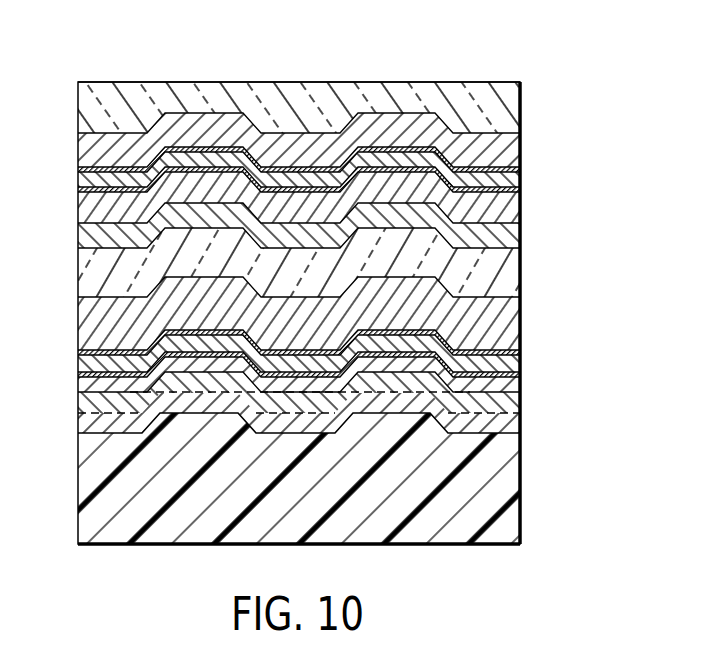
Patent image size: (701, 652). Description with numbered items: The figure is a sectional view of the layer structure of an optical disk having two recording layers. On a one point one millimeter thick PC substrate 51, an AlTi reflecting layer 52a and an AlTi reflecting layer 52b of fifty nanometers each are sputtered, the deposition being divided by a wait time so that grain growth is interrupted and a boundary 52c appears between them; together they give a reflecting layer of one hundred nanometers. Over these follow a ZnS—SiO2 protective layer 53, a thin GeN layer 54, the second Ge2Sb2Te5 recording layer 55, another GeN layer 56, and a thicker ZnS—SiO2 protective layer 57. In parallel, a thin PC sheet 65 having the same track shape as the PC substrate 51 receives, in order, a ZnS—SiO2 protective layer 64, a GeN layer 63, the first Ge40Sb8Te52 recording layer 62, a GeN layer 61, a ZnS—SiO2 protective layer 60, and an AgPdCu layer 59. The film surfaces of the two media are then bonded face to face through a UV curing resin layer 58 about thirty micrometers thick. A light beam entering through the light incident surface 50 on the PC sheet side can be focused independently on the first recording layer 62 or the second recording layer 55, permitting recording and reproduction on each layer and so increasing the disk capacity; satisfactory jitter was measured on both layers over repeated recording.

The light incident surface 50 is at (340, 74).
The PC substrate 51 is at (520, 482).
The AlTi reflecting layer 52a is at (520, 422).
The AlTi reflecting layer 52b is at (520, 401).
The boundary 52c is at (78, 417).
The ZnS—SiO2 protective layer 53 is at (520, 381).
The GeN layer 54 is at (78, 375).
The second recording layer 55 is at (520, 360).
The GeN layer 56 is at (78, 353).
The ZnS—SiO2 protective layer 57 is at (520, 322).
The UV curing resin layer 58 is at (520, 267).
The AgPdCu layer 59 is at (520, 235).
The ZnS—SiO2 protective layer 60 is at (520, 207).
The GeN layer 61 is at (78, 190).
The first recording layer 62 is at (520, 179).
The GeN layer 63 is at (78, 167).
The ZnS—SiO2 protective layer 64 is at (520, 148).
The PC sheet 65 is at (520, 104).